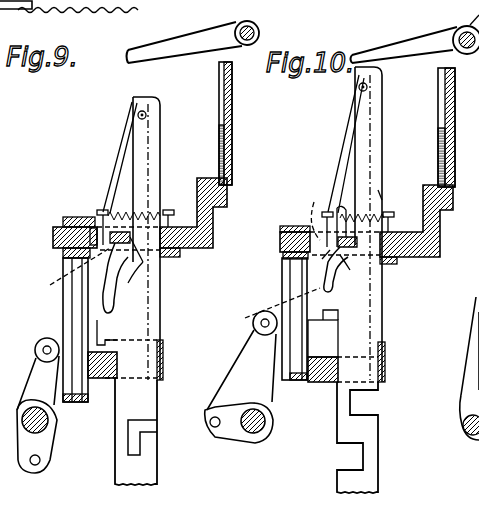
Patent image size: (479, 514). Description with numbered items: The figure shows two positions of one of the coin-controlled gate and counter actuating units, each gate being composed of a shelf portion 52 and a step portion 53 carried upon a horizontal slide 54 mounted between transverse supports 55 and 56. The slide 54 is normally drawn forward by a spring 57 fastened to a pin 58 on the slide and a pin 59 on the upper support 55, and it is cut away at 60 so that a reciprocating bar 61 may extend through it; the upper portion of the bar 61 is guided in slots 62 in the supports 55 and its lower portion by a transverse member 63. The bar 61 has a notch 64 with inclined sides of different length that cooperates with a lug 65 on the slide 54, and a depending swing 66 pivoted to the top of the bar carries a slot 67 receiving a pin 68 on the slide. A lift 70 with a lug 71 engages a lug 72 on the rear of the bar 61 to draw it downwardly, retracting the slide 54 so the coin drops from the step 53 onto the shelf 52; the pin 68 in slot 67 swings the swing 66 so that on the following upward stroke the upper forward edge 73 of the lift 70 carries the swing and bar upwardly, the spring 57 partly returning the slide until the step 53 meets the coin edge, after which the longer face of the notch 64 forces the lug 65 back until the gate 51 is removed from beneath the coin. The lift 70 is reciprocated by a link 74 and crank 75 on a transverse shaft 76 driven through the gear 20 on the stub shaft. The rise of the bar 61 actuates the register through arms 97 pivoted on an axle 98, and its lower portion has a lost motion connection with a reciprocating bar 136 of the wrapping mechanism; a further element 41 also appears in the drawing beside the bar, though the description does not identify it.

In FIG. 9, the gear 20 is at (78, 22).
In FIG. 9, the arms 97 is at (246, 22).
In FIG. 9, the transverse axle 98 is at (261, 32).
In FIG. 9, the rod 41 is at (233, 101).
In FIG. 10, the rod 41 is at (456, 105).
In FIG. 9, the gate 51 is at (228, 201).
In FIG. 10, the gate 51 is at (457, 193).
In FIG. 9, the shelf portion 52 is at (228, 189).
In FIG. 10, the shelf portion 52 is at (453, 187).
In FIG. 9, the step portion 53 is at (205, 178).
In FIG. 10, the step portion 53 is at (427, 185).
In FIG. 9, the horizontal slide 54 is at (53, 238).
In FIG. 10, the horizontal slide 54 is at (443, 250).
In FIG. 9, the transverse supports 55 is at (176, 256).
In FIG. 10, the transverse supports 55 is at (390, 265).
In FIG. 9, the transverse supports 56 is at (63, 224).
In FIG. 10, the transverse supports 56 is at (292, 226).
In FIG. 9, the spring 57 is at (116, 165).
In FIG. 10, the spring 57 is at (380, 195).
In FIG. 9, the pin 58 is at (101, 209).
In FIG. 10, the pin 58 is at (327, 211).
In FIG. 9, the pin 59 is at (169, 210).
In FIG. 10, the pin 59 is at (389, 213).
In FIG. 9, the cut-away portion 60 is at (97, 226).
In FIG. 9, the reciprocating bar 61 is at (157, 152).
In FIG. 10, the reciprocating bar 61 is at (382, 138).
In FIG. 9, the slots 62 is at (143, 248).
In FIG. 9, the transverse member 63 is at (163, 337).
In FIG. 10, the transverse member 63 is at (386, 363).
In FIG. 9, the notch 64 is at (128, 283).
In FIG. 10, the notch 64 is at (350, 270).
In FIG. 10, the lug 65 is at (322, 259).
In FIG. 10, the depending swing 66 is at (343, 142).
In FIG. 9, the slot 67 is at (102, 300).
In FIG. 10, the slot 67 is at (322, 283).
In FIG. 9, the pin 68 is at (68, 274).
In FIG. 10, the pin 68 is at (283, 252).
In FIG. 9, the lift 70 is at (75, 403).
In FIG. 10, the lift 70 is at (290, 352).
In FIG. 9, the lug 71 is at (117, 343).
In FIG. 10, the lug 71 is at (352, 320).
In FIG. 9, the lug 72 is at (115, 353).
In FIG. 10, the lug 72 is at (323, 351).
In FIG. 10, the upper forward edge 73 is at (256, 323).
In FIG. 9, the link 74 is at (38, 372).
In FIG. 10, the link 74 is at (228, 391).
In FIG. 9, the crank 75 is at (48, 446).
In FIG. 10, the crank 75 is at (228, 440).
In FIG. 9, the transverse shaft 76 is at (30, 410).
In FIG. 10, the transverse shaft 76 is at (268, 421).
In FIG. 9, the reciprocating bar 136 is at (152, 455).